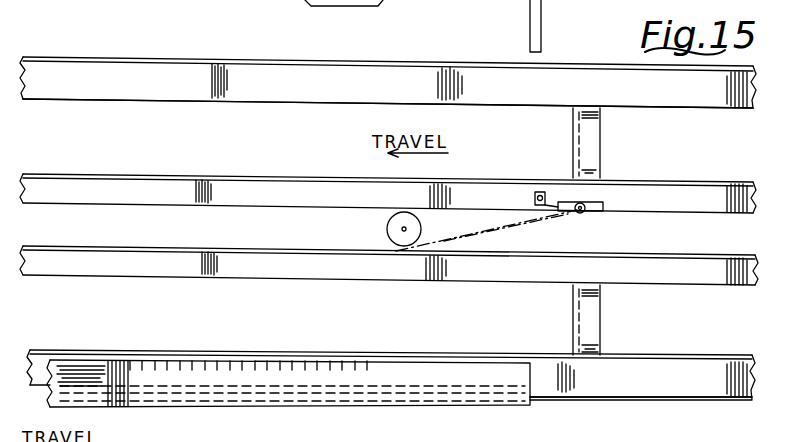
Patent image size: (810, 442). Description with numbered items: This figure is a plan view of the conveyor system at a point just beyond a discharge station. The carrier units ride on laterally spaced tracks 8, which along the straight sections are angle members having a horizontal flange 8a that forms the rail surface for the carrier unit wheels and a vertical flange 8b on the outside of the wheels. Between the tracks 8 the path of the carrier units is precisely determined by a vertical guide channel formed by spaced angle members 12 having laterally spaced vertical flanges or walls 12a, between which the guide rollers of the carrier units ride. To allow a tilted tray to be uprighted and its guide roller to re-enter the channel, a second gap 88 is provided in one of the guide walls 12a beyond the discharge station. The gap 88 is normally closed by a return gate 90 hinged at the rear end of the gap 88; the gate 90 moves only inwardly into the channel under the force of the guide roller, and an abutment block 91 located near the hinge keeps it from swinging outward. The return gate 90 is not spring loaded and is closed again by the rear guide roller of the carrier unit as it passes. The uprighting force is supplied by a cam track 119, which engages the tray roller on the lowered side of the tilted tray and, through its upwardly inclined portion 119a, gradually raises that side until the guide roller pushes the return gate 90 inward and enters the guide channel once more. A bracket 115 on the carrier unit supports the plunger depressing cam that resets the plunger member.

The track 8 is at (494, 62).
The horizontal flange 8a is at (507, 92).
The vertical flange 8b is at (418, 62).
The angle member 12 is at (683, 183).
The vertical flange 12a is at (749, 252).
The second gap 88 is at (402, 212).
The return gate 90 is at (470, 238).
The abutment block 91 is at (536, 198).
The bracket 115 is at (222, 432).
The cam track 119 is at (375, 404).
The upwardly inclined portion 119a is at (436, 339).